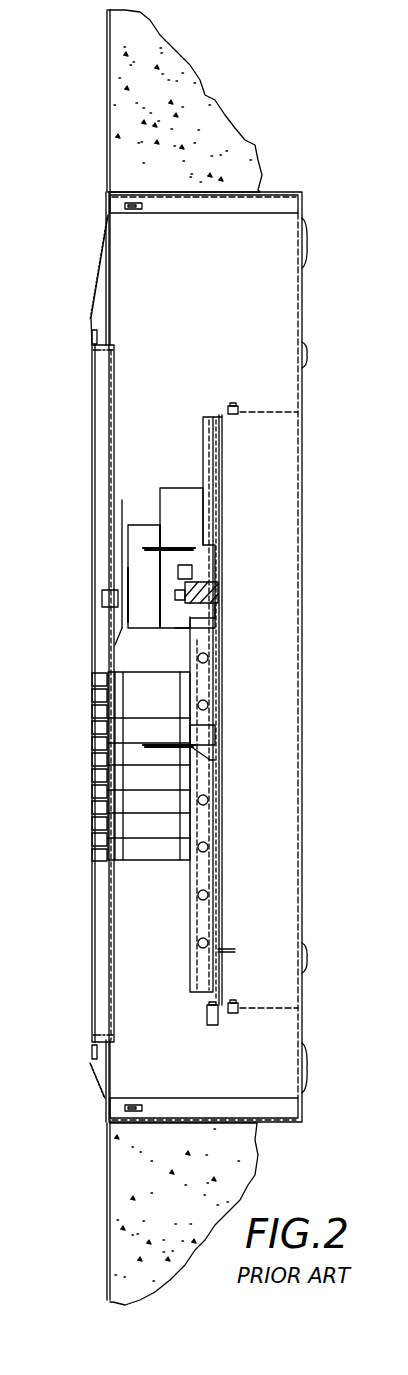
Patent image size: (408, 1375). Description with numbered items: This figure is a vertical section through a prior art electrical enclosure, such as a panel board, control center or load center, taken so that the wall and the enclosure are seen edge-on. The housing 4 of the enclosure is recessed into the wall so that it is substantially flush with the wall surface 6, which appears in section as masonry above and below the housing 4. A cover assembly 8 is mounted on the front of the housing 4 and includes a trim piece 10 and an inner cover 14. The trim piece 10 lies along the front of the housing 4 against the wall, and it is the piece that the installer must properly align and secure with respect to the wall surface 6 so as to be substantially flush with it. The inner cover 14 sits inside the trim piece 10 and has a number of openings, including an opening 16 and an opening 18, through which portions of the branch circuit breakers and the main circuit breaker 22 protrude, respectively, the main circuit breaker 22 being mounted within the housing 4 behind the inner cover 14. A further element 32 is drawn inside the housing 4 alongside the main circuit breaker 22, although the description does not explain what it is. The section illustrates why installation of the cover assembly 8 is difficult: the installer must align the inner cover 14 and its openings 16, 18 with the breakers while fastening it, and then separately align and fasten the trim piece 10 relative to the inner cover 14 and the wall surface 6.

The housing 4 is at (284, 192).
The wall surface 6 is at (108, 14).
The cover assembly 8 is at (90, 163).
The trim piece 10 is at (107, 96).
The inner cover 14 is at (122, 518).
The opening 16 is at (92, 862).
The opening 18 is at (121, 540).
The main circuit breaker 22 is at (138, 528).
The mounting plate 32 is at (185, 968).